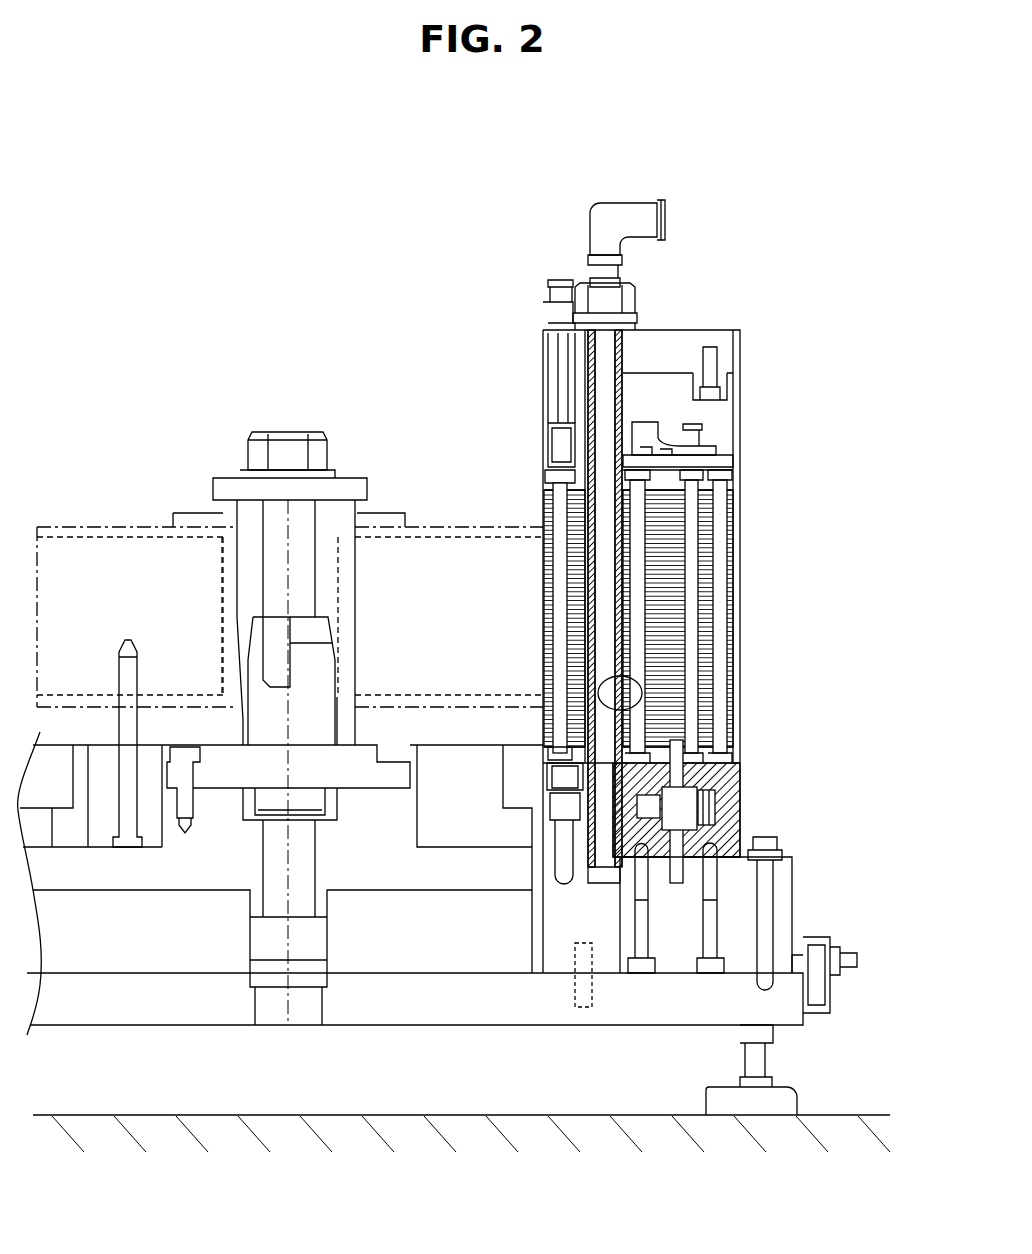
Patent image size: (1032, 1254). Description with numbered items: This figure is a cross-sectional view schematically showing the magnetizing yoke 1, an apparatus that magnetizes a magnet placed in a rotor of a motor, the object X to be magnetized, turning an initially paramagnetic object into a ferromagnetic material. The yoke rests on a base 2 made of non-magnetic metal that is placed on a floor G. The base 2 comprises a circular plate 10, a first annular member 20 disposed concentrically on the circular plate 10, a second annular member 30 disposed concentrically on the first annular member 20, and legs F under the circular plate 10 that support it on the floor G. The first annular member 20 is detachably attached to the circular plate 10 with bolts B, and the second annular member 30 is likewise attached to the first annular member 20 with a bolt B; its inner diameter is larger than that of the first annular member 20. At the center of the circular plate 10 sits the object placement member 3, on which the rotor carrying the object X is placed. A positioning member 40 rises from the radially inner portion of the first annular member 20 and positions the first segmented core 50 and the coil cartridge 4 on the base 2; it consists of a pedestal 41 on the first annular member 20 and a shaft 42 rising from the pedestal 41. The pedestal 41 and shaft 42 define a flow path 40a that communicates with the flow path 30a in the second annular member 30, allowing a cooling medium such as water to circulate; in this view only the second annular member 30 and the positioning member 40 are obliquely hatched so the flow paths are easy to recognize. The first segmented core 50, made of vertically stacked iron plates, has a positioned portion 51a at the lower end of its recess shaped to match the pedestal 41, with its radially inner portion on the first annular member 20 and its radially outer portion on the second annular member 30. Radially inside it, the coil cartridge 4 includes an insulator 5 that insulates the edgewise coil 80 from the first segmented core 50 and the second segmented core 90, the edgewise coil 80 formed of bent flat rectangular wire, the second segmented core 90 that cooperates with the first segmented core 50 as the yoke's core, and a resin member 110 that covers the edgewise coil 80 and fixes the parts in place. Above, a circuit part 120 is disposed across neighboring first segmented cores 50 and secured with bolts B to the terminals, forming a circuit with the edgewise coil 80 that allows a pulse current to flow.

The magnetizing yoke 1 is at (400, 240).
The base 2 is at (885, 865).
The object placement member 3 is at (228, 767).
The coil cartridge 4 is at (462, 396).
The insulator 5 is at (545, 485).
The circular plate 10 is at (790, 998).
The first annular member 20 is at (782, 913).
The second annular member 30 is at (782, 842).
The flow path 30a is at (693, 772).
The positioning member 40 is at (828, 597).
The flow path 40a is at (640, 710).
The pedestal 41 is at (745, 760).
The shaft 42 is at (640, 633).
The first segmented core 50 is at (740, 570).
The positioned portion 51a is at (660, 820).
The edgewise coil 80 is at (545, 447).
The second segmented core 90 is at (545, 567).
The resin member 110 is at (700, 435).
The circuit part 120 is at (700, 458).
The bolt B is at (720, 398).
The object to be magnetized X is at (130, 525).
The floor G is at (455, 1115).
The leg F is at (785, 1098).